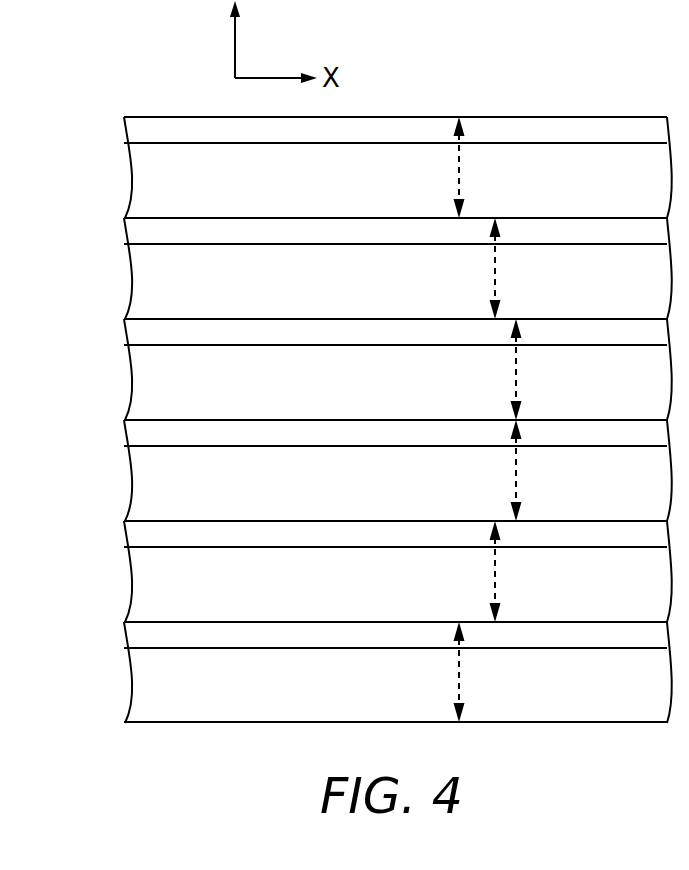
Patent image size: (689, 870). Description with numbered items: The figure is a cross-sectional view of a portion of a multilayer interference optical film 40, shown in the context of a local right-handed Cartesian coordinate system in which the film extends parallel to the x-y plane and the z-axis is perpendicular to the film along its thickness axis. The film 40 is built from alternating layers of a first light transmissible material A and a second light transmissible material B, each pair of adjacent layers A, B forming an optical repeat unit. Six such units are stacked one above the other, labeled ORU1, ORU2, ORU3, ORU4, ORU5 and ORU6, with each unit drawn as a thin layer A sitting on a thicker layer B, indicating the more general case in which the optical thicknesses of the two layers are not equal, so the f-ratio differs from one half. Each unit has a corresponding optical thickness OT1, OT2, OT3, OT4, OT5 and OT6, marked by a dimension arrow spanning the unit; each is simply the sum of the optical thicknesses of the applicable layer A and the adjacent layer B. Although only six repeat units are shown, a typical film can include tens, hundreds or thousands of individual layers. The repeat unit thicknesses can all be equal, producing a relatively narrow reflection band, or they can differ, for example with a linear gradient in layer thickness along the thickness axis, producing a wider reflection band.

The optical film 40 is at (344, 382).
The optical repeat unit ORU1 is at (344, 167).
The optical repeat unit ORU2 is at (344, 268).
The optical repeat unit ORU3 is at (344, 369).
The optical repeat unit ORU4 is at (344, 470).
The optical repeat unit ORU5 is at (344, 571).
The optical repeat unit ORU6 is at (344, 672).
The first light transmissible material layer A is at (286, 383).
The second light transmissible material layer B is at (312, 435).
The optical thickness OT1 is at (486, 167).
The optical thickness OT2 is at (522, 268).
The optical thickness OT3 is at (543, 369).
The optical thickness OT4 is at (543, 470).
The optical thickness OT5 is at (522, 571).
The optical thickness OT6 is at (492, 672).